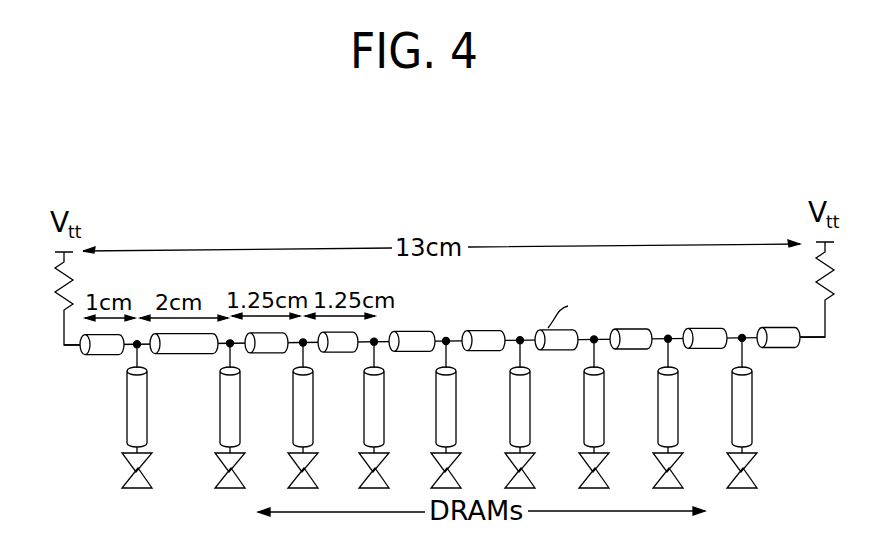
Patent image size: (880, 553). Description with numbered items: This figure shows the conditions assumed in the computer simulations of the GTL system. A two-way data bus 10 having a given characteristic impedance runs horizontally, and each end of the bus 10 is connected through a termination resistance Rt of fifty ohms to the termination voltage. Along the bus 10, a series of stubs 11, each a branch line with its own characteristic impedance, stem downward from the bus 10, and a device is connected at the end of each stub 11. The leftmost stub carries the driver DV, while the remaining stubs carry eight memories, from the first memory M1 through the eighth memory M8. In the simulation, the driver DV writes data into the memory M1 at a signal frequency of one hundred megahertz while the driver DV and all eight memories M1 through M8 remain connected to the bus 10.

The bus 10 is at (483, 328).
The stub 11 is at (764, 432).
The termination resistance Rt is at (62, 303).
The driver DV is at (143, 489).
The memory M1 is at (240, 488).
The memory M8 is at (752, 488).